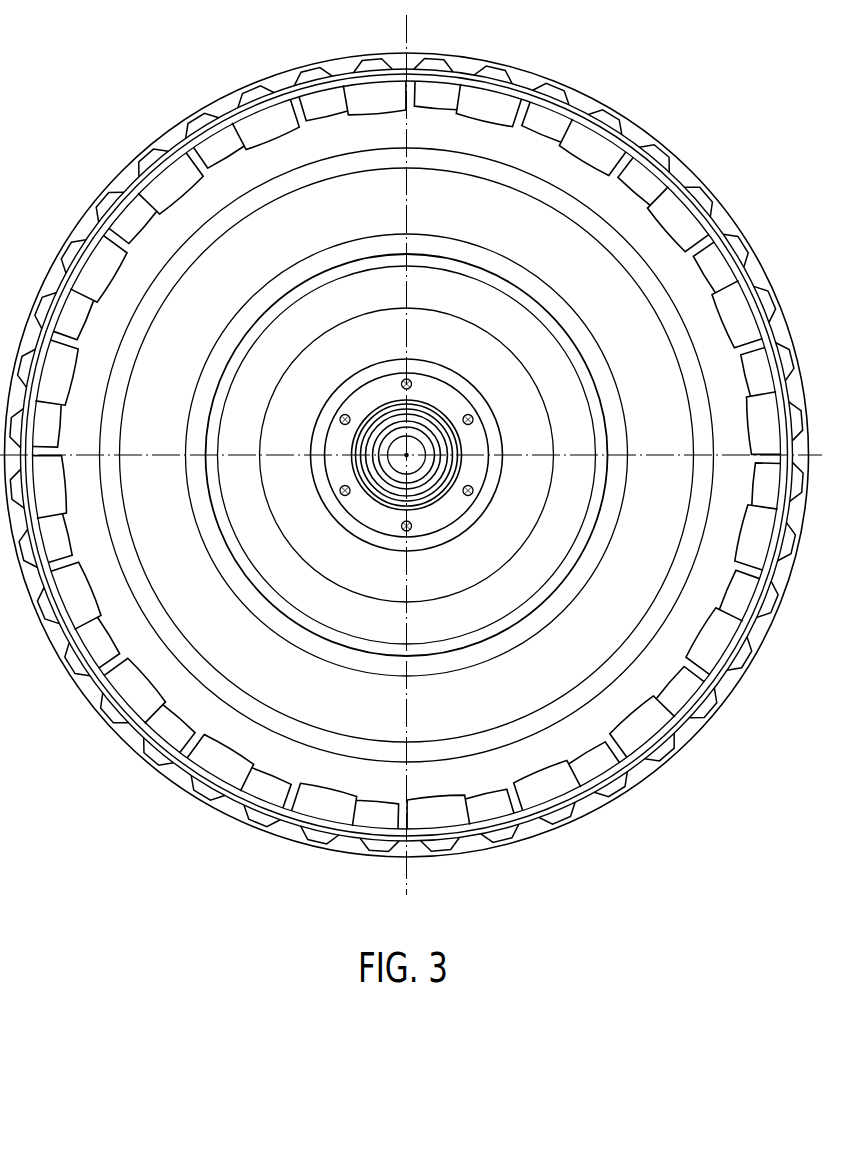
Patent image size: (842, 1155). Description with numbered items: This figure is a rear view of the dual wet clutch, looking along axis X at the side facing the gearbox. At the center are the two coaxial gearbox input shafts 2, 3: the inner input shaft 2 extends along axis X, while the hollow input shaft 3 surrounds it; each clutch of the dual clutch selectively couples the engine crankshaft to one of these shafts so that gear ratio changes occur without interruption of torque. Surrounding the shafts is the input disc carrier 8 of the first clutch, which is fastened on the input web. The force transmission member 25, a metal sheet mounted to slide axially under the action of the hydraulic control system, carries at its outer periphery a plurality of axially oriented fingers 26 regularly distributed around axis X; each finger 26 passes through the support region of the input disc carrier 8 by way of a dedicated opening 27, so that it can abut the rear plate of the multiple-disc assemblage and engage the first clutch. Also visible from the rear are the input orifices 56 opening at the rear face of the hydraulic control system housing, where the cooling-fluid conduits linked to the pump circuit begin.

The input shaft 2 is at (382, 482).
The input shaft 3 is at (422, 492).
The input disc carrier 8 is at (560, 825).
The force transmission member 25 is at (572, 258).
The finger 26 is at (545, 122).
The opening 27 is at (570, 103).
The input orifice 56 is at (470, 492).